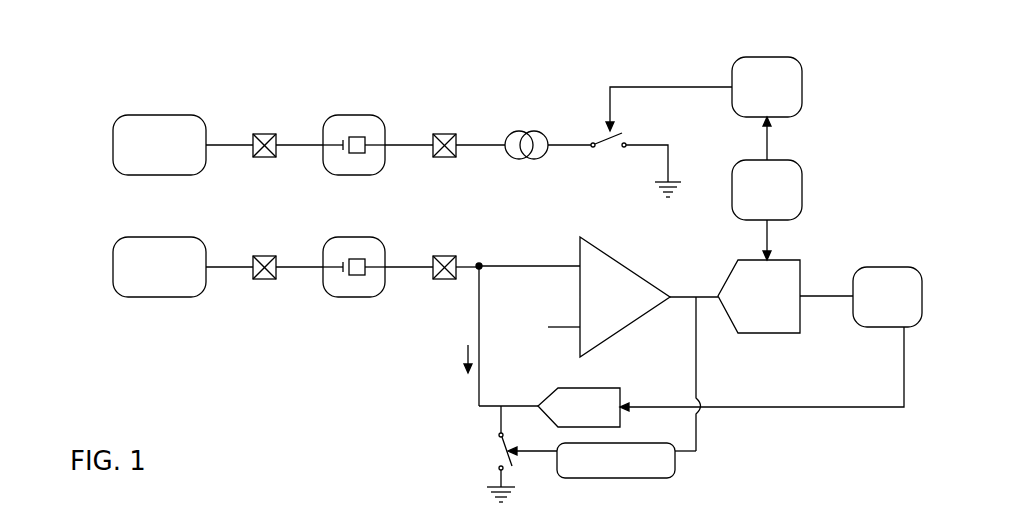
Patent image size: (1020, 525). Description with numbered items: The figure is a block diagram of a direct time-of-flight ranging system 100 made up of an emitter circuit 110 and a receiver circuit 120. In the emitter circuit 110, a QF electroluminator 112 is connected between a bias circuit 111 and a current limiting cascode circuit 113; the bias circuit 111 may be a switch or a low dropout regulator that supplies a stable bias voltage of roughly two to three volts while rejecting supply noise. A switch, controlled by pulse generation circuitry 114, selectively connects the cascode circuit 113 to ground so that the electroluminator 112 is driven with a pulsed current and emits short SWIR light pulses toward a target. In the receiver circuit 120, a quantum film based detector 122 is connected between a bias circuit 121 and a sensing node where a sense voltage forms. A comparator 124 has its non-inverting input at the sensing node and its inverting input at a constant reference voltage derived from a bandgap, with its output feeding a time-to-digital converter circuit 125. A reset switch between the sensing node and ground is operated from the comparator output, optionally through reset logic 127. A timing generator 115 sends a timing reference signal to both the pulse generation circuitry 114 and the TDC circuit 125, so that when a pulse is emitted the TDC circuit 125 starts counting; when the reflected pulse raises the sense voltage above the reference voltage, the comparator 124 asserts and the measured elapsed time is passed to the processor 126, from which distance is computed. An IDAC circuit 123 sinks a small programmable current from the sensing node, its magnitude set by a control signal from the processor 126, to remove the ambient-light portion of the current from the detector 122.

The direct time-of-flight ranging system 100 is at (424, 57).
The emitter circuit 110 is at (80, 150).
The bias circuit 111 is at (139, 177).
The QF electroluminator 112 is at (344, 177).
The current limiting cascode circuit 113 is at (513, 160).
The pulse generation circuitry 114 is at (735, 118).
The timing generator 115 is at (737, 222).
The receiver circuit 120 is at (80, 268).
The bias circuit 121 is at (139, 299).
The quantum film based detector 122 is at (344, 299).
The current digital to analog converter circuit 123 is at (555, 387).
The comparator 124 is at (628, 328).
The time-to-digital converter circuit 125 is at (753, 335).
The processor 126 is at (878, 329).
The reset logic 127 is at (598, 479).